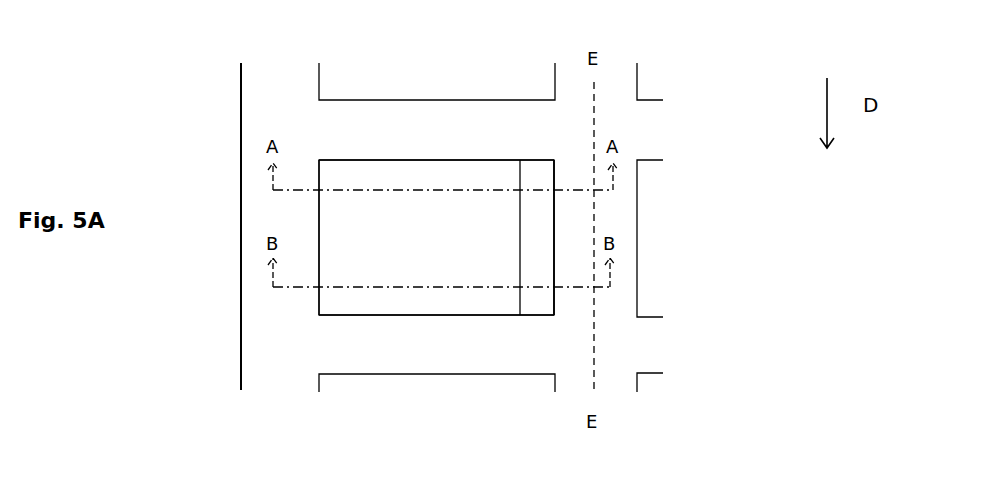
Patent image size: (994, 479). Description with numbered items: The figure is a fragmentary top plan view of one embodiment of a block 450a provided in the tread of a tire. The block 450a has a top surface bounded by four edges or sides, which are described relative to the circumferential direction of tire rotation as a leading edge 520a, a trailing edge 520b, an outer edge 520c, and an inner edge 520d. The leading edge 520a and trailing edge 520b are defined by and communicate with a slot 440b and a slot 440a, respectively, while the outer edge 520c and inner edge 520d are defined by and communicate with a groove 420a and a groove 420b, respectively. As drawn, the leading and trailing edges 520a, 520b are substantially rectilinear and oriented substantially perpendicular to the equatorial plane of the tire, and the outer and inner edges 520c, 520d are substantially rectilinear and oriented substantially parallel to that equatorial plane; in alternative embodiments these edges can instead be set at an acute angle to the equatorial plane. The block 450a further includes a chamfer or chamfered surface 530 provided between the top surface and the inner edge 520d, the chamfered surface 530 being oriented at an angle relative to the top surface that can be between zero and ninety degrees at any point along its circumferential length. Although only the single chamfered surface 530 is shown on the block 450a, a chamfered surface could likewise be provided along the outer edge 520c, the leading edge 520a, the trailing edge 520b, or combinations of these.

The groove 420a is at (278, 375).
The groove 420b is at (620, 384).
The slot 440a is at (470, 144).
The slot 440b is at (470, 356).
The block 450a is at (470, 250).
The leading edge 520a is at (495, 315).
The trailing edge 520b is at (487, 162).
The outer edge 520c is at (318, 217).
The inner edge 520d is at (554, 228).
The chamfered surface 530 is at (536, 304).